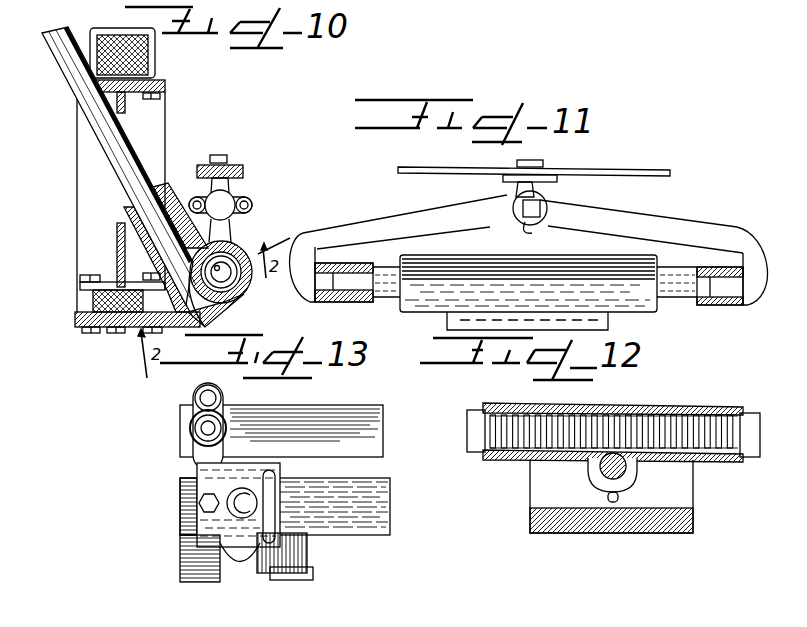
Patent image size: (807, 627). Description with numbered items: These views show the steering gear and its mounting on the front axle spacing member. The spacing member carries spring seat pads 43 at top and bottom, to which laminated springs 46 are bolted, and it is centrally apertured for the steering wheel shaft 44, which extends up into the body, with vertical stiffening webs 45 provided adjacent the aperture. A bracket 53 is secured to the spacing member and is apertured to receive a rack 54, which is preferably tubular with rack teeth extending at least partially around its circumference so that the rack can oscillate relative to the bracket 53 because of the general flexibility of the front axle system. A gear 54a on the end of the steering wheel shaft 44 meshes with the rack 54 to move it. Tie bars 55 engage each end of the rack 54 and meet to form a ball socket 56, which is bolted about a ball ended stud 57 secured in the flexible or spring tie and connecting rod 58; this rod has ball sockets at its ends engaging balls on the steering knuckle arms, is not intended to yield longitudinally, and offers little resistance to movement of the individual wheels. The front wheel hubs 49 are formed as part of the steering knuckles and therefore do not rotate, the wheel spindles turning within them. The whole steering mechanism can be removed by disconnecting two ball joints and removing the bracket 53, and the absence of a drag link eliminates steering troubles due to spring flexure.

In FIG. 10, the spring seat pad 43 is at (160, 80).
In FIG. 10, the steering wheel shaft 44 is at (110, 130).
In FIG. 10, the vertical stiffening web 45 is at (117, 230).
In FIG. 10, the laminated spring 46 is at (137, 67).
In FIG. 13, the front wheel hub 49 is at (293, 560).
In FIG. 10, the bracket 53 is at (124, 328).
In FIG. 11, the bracket 53 is at (590, 322).
In FIG. 12, the bracket 53 is at (673, 498).
In FIG. 10, the rack 54 is at (218, 267).
In FIG. 11, the rack 54 is at (670, 297).
In FIG. 12, the rack 54 is at (744, 428).
In FIG. 10, the gear 54a is at (228, 283).
In FIG. 12, the gear 54a is at (597, 470).
In FIG. 10, the tie bar 55 is at (195, 215).
In FIG. 11, the tie bar 55 is at (388, 228).
In FIG. 10, the ball socket 56 is at (226, 200).
In FIG. 11, the ball socket 56 is at (530, 232).
In FIG. 10, the ball ended stud 57 is at (238, 192).
In FIG. 11, the ball ended stud 57 is at (532, 184).
In FIG. 10, the tie and connecting rod 58 is at (232, 165).
In FIG. 11, the tie and connecting rod 58 is at (616, 172).